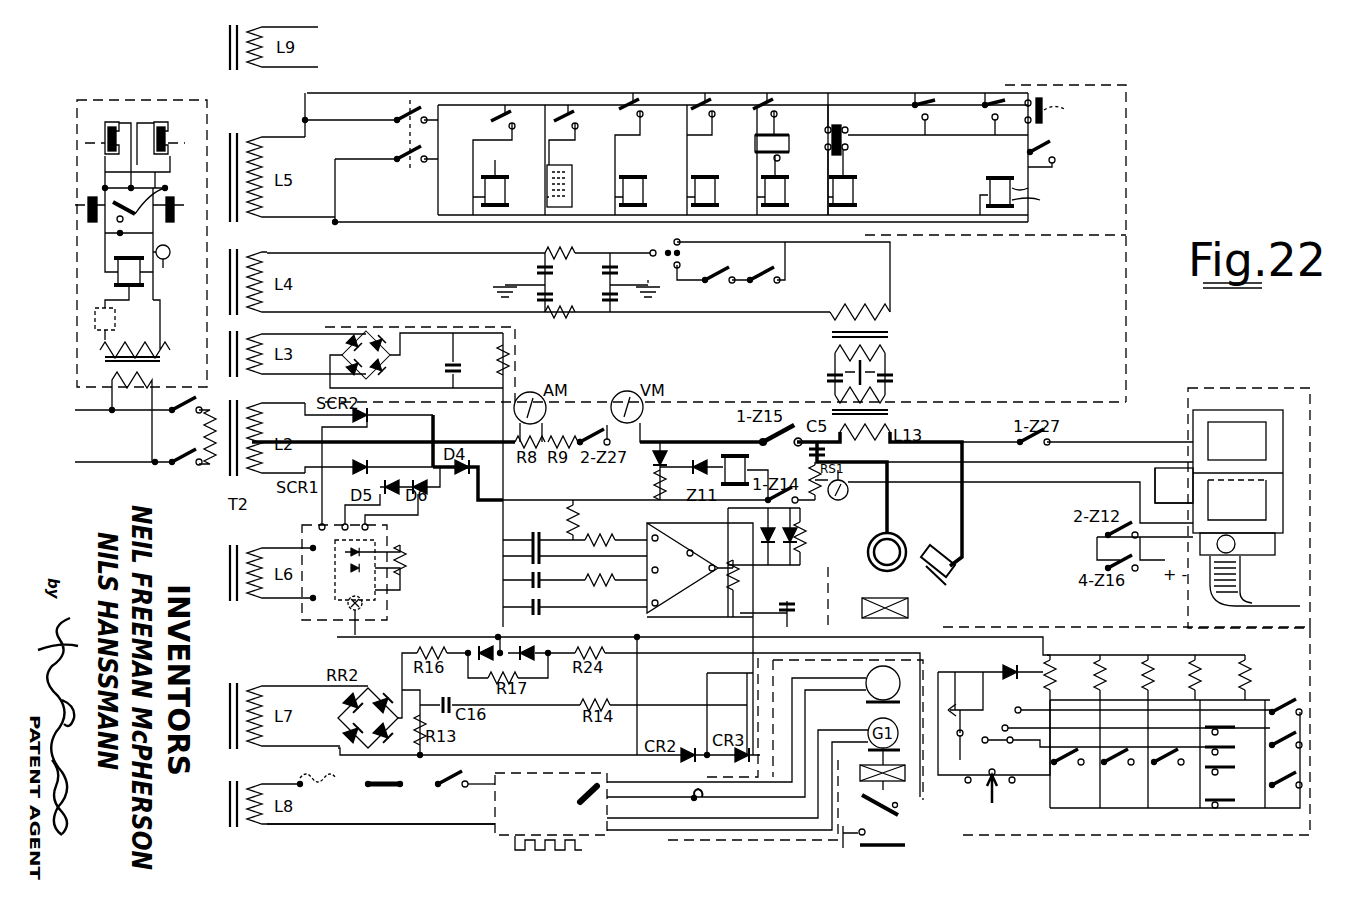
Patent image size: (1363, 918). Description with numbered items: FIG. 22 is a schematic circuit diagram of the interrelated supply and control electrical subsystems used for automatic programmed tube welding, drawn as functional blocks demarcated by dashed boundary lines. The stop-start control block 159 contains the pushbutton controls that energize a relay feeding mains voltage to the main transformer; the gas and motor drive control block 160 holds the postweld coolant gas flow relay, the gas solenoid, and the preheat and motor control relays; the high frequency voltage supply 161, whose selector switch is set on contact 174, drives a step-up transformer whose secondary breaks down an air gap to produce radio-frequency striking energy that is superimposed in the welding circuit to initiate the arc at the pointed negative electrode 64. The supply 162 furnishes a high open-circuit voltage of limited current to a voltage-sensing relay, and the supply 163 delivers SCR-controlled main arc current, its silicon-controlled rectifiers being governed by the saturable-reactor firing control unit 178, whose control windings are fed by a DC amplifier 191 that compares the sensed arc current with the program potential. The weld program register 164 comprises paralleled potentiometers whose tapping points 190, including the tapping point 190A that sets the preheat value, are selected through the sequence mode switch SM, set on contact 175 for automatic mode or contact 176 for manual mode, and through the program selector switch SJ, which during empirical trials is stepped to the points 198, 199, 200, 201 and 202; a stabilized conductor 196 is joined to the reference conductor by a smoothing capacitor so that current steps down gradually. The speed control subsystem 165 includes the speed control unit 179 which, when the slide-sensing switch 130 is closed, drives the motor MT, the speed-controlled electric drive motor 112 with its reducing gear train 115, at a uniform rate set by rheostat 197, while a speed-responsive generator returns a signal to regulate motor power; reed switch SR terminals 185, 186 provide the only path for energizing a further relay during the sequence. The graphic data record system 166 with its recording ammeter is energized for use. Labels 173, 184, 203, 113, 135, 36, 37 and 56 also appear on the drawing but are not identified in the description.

The stop-start control block 159 is at (150, 104).
The gas and motor drive control block 160 is at (1120, 190).
The high frequency voltage supply 161 is at (1120, 310).
The supply of high open-circuit voltage of limited maximum current 162 is at (520, 358).
The supply of SCR-controlled main arc current 163 is at (840, 598).
The weld program register 164 is at (1098, 630).
The speed control subsystem 165 is at (693, 845).
The graphic data record system 166 is at (1230, 396).
The selector switch 173 is at (678, 246).
The contact 174 is at (668, 290).
The contact 175 is at (1020, 789).
The contact 176 is at (950, 788).
The firing control unit 178 is at (302, 608).
The speed control unit 179 is at (492, 818).
The meter shunt box 184 is at (1174, 485).
The reed switch terminal 185 is at (840, 846).
The reed switch terminal 186 is at (903, 846).
The tapping point 190 is at (1240, 676).
The tapping point 190A is at (1260, 686).
The DC amplifier 191 is at (696, 589).
The stabilized conductor 196 is at (636, 658).
The rheostat 197 is at (570, 845).
The program selector switch contact point 198 is at (1008, 703).
The program selector switch contact point 199 is at (998, 721).
The program selector switch contact point 200 is at (1002, 741).
The program selector switch contact point 201 is at (974, 719).
The program selector switch contact point 202 is at (1104, 714).
The control box 203 is at (710, 657).
The electric drive motor 112 is at (868, 700).
The gas solenoid valve 113 is at (901, 610).
The reducing gear train 115 is at (891, 774).
The slide-sensing switch 130 is at (700, 797).
The inching switch 135 is at (898, 812).
The current transformer 36 is at (905, 546).
The current transformer 37 is at (905, 548).
The workpiece 56 is at (943, 580).
The electrode 64 is at (938, 557).